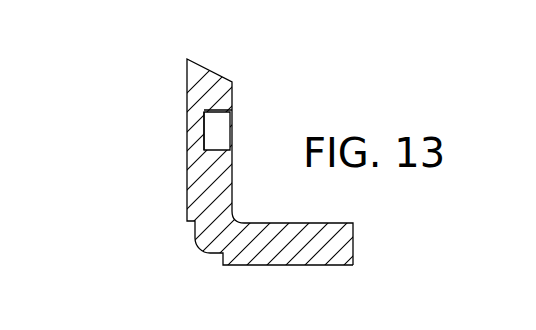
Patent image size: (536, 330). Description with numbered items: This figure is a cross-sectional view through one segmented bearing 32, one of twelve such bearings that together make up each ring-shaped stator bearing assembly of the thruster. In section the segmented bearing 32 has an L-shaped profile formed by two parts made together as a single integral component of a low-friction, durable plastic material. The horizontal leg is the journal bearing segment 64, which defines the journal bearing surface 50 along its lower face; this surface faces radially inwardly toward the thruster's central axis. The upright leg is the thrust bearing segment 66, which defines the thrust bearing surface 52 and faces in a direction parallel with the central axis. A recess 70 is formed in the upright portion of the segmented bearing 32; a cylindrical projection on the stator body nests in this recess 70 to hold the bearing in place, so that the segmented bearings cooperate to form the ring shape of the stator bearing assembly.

The segmented bearing 32 is at (153, 233).
The journal bearing surface 50 is at (288, 268).
The thrust bearing surface 52 is at (212, 123).
The journal bearing segment 64 is at (330, 242).
The thrust bearing segment 66 is at (208, 180).
The recess 70 is at (218, 137).